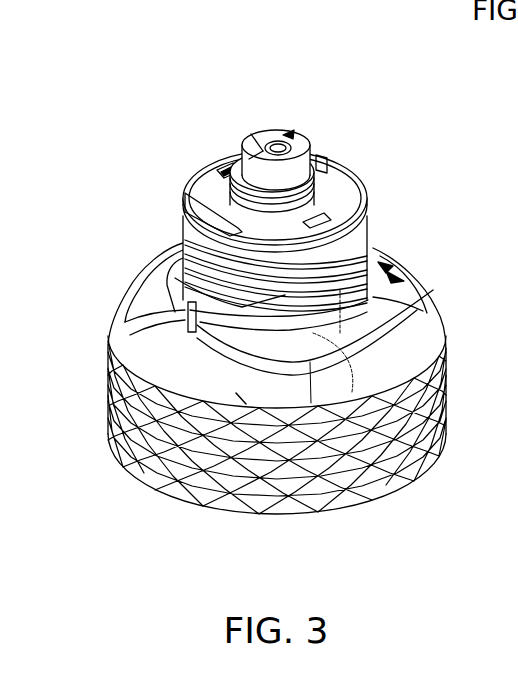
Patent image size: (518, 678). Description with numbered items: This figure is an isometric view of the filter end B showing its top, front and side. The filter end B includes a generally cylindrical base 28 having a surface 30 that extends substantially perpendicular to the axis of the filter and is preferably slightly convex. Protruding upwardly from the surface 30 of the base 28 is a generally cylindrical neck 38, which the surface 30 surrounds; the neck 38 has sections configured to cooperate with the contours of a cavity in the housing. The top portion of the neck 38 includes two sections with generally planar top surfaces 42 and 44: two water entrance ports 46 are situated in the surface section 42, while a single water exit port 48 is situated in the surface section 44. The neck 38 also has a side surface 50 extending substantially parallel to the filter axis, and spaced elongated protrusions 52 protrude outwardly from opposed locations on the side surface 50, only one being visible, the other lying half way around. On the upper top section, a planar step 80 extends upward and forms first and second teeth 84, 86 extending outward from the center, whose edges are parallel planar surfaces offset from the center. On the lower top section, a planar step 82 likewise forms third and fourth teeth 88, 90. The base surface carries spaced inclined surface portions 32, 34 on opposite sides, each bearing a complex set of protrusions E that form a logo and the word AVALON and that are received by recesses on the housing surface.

The base 28 is at (108, 380).
The surface 30 is at (445, 378).
The inclined surface portion 32 is at (167, 312).
The inclined surface portion 34 is at (410, 298).
The neck 38 is at (371, 187).
The planar top surface section 42 is at (215, 170).
The planar top surface section 44 is at (265, 128).
The water entrance port 46 is at (218, 172).
The water exit port 48 is at (278, 143).
The side surface 50 is at (366, 497).
The elongated protrusion 52 is at (163, 400).
The planar step 80 is at (244, 162).
The planar step 82 is at (236, 232).
The first tooth 84 is at (258, 160).
The second tooth 86 is at (290, 134).
The third tooth 88 is at (240, 240).
The fourth tooth 90 is at (326, 158).
The complex set of protrusions E is at (408, 292).
The filter end B is at (449, 330).